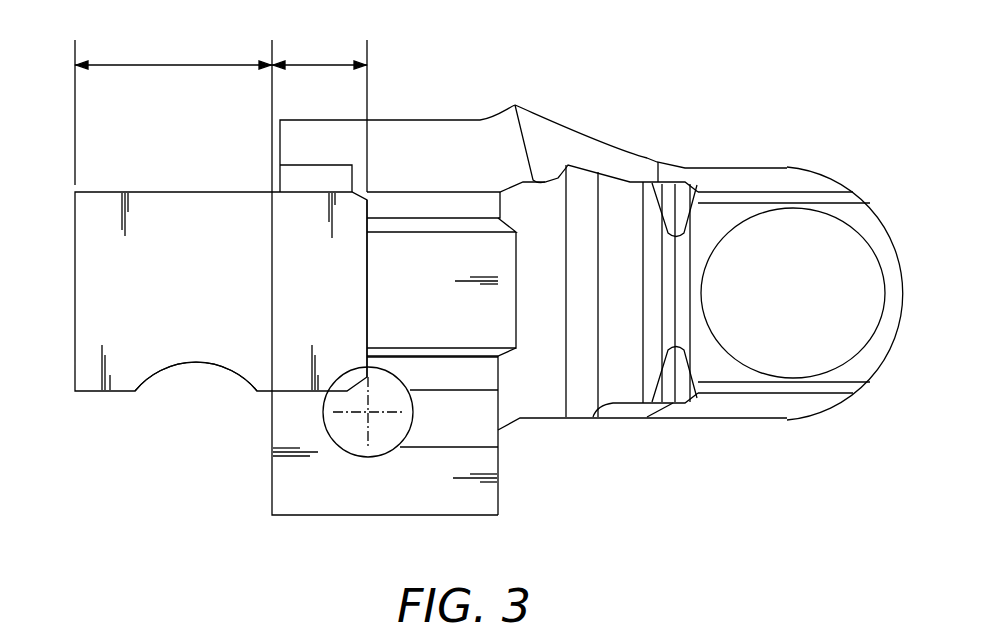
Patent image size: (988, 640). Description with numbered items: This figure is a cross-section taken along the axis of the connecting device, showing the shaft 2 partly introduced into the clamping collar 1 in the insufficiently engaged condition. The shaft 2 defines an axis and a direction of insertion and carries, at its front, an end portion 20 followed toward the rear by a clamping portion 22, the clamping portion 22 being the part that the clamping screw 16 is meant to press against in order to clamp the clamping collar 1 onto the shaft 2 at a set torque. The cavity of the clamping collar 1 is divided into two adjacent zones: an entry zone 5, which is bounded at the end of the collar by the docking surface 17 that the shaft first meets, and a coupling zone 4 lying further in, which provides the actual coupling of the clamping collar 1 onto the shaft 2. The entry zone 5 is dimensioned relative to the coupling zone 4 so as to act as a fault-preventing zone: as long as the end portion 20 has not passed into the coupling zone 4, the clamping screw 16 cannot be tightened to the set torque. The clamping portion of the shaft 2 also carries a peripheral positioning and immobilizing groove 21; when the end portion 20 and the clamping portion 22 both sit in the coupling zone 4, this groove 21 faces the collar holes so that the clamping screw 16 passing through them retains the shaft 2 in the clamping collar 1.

The clamping collar 1 is at (885, 177).
The shaft 2 is at (64, 305).
The coupling zone 4 is at (481, 254).
The entry zone 5 is at (347, 174).
The clamping screw 16 is at (350, 435).
The docking surface 17 is at (261, 509).
The end portion 20 is at (322, 60).
The positioning and immobilizing groove 21 is at (170, 384).
The clamping portion 22 is at (165, 60).